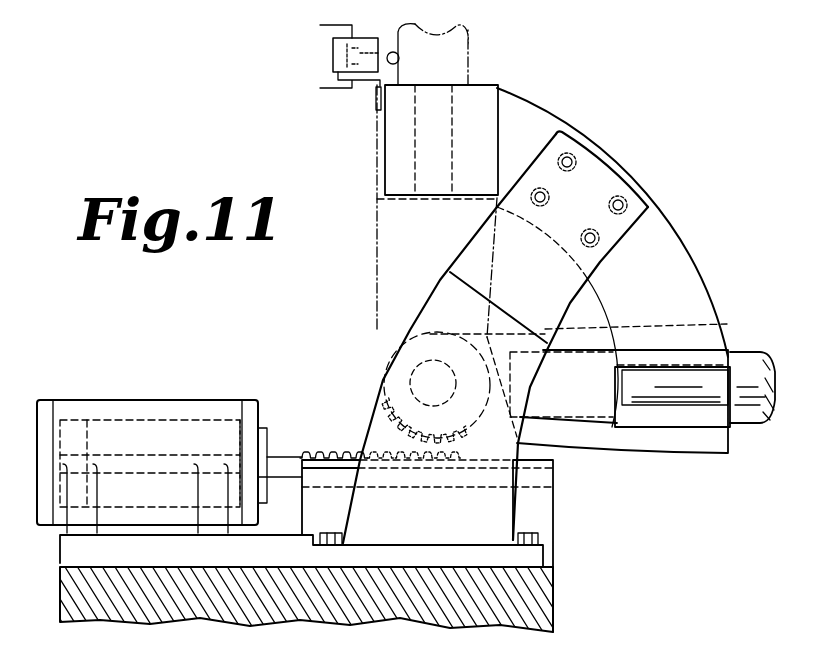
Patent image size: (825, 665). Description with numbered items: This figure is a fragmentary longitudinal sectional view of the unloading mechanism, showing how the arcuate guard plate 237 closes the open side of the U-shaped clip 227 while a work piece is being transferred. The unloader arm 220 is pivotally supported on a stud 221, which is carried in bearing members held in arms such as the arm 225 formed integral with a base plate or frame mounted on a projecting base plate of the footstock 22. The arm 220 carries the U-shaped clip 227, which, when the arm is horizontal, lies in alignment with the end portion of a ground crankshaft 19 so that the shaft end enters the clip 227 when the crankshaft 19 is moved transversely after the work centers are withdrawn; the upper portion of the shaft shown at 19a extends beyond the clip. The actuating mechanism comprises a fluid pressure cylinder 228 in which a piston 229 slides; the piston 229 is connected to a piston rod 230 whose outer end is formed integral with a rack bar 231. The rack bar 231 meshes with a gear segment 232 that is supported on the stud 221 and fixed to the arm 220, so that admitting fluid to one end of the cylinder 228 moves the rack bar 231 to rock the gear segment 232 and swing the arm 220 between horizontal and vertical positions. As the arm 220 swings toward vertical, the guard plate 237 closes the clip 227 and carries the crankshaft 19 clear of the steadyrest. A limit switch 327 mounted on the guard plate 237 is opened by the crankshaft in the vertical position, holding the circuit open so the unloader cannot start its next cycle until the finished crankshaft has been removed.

The footstock 22 is at (553, 595).
The fluid pressure cylinder 228 is at (135, 410).
The piston 229 is at (77, 427).
The piston rod 230 is at (275, 458).
The rack bar 231 is at (317, 447).
The arm 225 is at (358, 441).
The stud 221 is at (410, 360).
The unloader arm 220 is at (585, 442).
The gear segment 232 is at (376, 391).
The guard plate 237 is at (669, 216).
The U-shaped clip 227 is at (623, 407).
The crankshaft 19 is at (752, 355).
The tube upper section 19a is at (462, 60).
The limit switch 327 is at (333, 58).